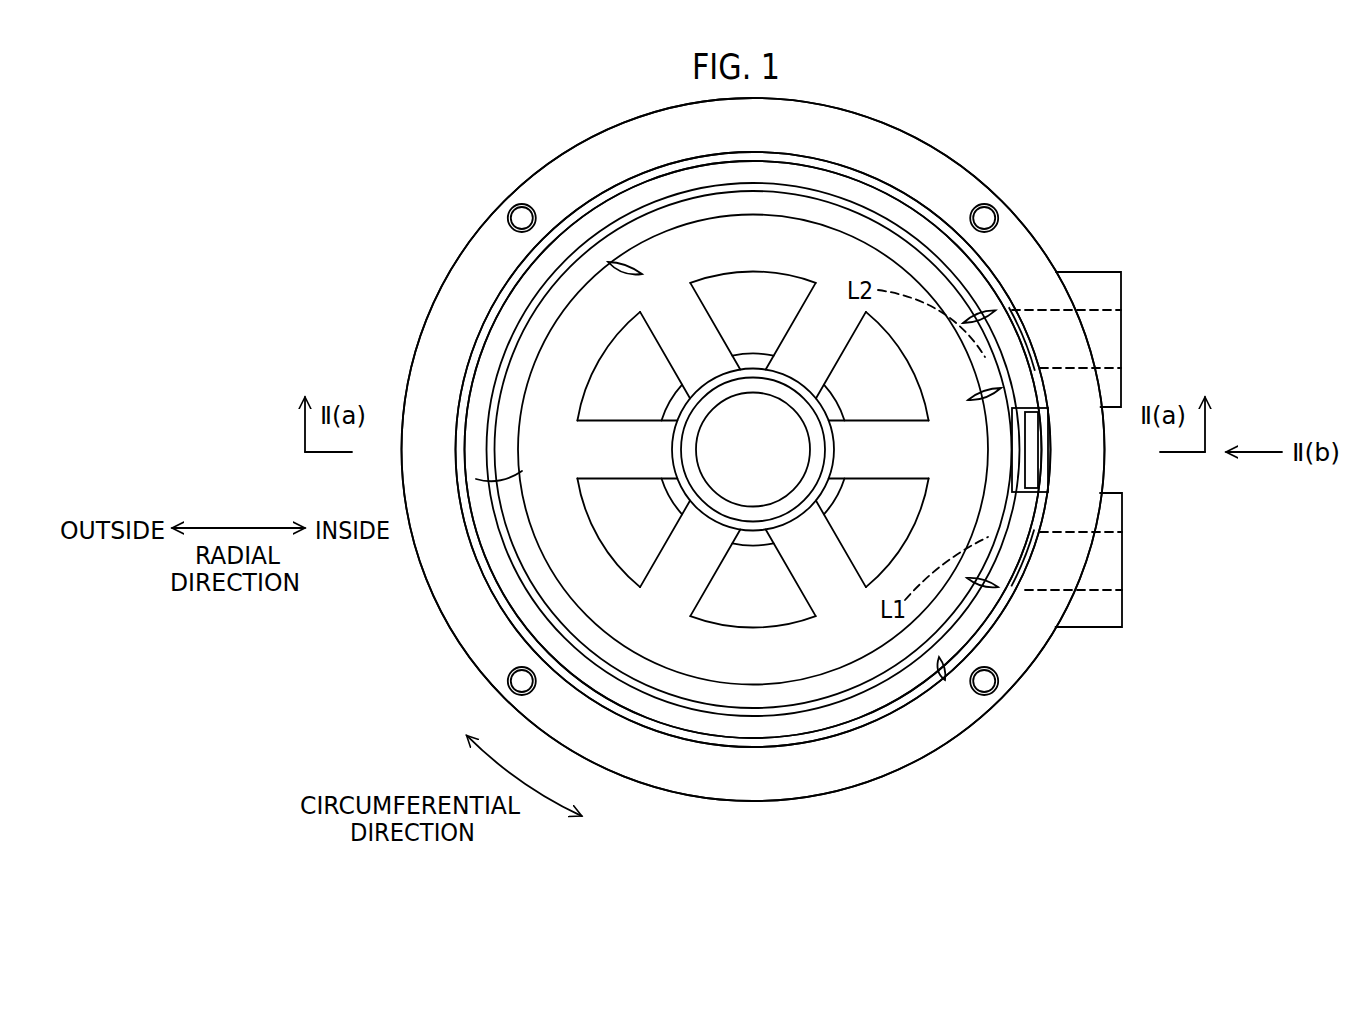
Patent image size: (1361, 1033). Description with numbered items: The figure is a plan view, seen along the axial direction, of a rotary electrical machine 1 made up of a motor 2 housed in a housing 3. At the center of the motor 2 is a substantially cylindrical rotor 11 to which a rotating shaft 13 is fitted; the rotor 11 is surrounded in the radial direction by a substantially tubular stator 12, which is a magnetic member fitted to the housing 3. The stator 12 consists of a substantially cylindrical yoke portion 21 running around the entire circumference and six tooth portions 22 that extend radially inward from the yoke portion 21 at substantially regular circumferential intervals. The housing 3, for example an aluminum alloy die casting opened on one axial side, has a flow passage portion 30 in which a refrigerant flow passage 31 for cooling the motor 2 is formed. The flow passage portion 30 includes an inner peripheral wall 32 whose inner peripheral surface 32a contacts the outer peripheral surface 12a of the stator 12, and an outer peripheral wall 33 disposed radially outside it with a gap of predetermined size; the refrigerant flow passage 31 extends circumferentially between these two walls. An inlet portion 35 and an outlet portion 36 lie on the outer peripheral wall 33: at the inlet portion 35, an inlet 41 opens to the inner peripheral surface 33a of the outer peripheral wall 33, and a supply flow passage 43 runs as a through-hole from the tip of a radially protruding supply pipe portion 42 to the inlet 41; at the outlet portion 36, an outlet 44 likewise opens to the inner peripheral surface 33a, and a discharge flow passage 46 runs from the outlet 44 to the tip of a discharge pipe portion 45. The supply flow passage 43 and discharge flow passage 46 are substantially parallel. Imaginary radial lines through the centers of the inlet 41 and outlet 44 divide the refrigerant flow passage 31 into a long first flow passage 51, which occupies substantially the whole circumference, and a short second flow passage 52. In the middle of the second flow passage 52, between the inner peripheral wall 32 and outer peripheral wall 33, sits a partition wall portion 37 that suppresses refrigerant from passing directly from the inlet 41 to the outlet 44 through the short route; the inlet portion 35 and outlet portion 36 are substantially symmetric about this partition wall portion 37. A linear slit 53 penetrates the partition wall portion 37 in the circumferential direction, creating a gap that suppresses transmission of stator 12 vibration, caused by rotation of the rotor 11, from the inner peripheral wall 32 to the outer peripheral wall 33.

The rotary electrical machine 1 is at (376, 202).
The motor 2 is at (963, 283).
The housing 3 is at (516, 183).
The rotor 11 is at (755, 388).
The stator 12 is at (868, 243).
The outer peripheral surface 12a is at (476, 479).
The rotating shaft 13 is at (752, 478).
The yoke portion 21 is at (612, 327).
The tooth portions 22 is at (887, 462).
The flow passage portion 30 is at (493, 640).
The refrigerant flow passage 31 is at (502, 578).
The inner peripheral wall 32 is at (820, 692).
The inner peripheral surface 32a is at (620, 262).
The outer peripheral wall 33 is at (907, 725).
The inner peripheral surface 33a is at (945, 680).
The inlet portion 35 is at (1104, 636).
The outlet portion 36 is at (1080, 263).
The partition wall portion 37 is at (1045, 478).
The inlet 41 is at (998, 587).
The supply pipe portion 42 is at (1105, 603).
The supply flow passage 43 is at (1050, 582).
The outlet 44 is at (996, 310).
The discharge pipe portion 45 is at (1115, 383).
The discharge flow passage 46 is at (1112, 306).
The first flow passage 51 is at (738, 732).
The second flow passage 52 is at (1023, 507).
The slit 53 is at (1001, 388).